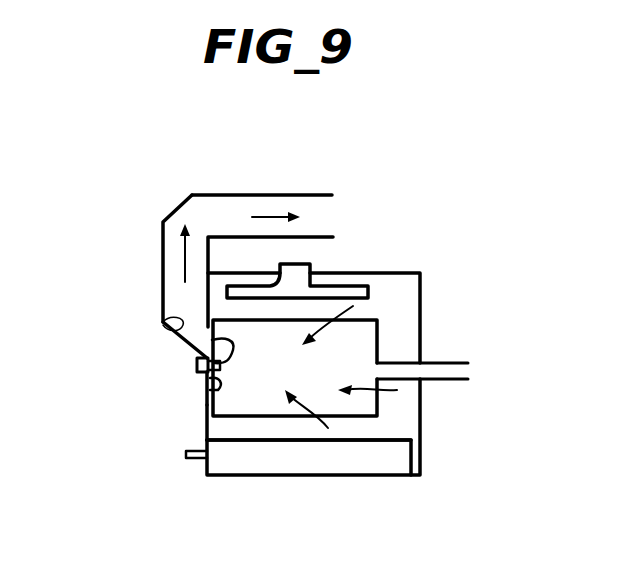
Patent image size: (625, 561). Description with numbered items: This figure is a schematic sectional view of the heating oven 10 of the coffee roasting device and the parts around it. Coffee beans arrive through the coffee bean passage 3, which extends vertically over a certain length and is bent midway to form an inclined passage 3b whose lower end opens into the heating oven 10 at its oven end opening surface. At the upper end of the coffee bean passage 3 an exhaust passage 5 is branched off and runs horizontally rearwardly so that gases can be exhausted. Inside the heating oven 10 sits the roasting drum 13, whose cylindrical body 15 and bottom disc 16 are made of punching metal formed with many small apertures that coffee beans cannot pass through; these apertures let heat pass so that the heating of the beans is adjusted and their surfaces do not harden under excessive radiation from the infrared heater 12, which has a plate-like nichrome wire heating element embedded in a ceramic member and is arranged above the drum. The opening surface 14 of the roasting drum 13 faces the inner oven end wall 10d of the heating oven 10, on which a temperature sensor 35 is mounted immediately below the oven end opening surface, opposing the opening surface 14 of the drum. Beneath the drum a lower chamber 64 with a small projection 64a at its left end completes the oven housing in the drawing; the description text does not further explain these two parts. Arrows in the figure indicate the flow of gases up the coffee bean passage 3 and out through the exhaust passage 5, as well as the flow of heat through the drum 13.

The coffee bean passage 3 is at (163, 248).
The inclined passage 3b is at (162, 323).
The exhaust passage 5 is at (332, 196).
The heating oven 10 is at (392, 273).
The inner oven end wall 10d is at (205, 393).
The infrared heater 12 is at (312, 289).
The roasting drum 13 is at (383, 345).
The opening surface 14 is at (207, 408).
The cylindrical body 15 is at (368, 320).
The bottom disc 16 is at (378, 405).
The temperature sensor 35 is at (200, 346).
The lower chamber 64 is at (325, 462).
The projection 64a is at (186, 455).